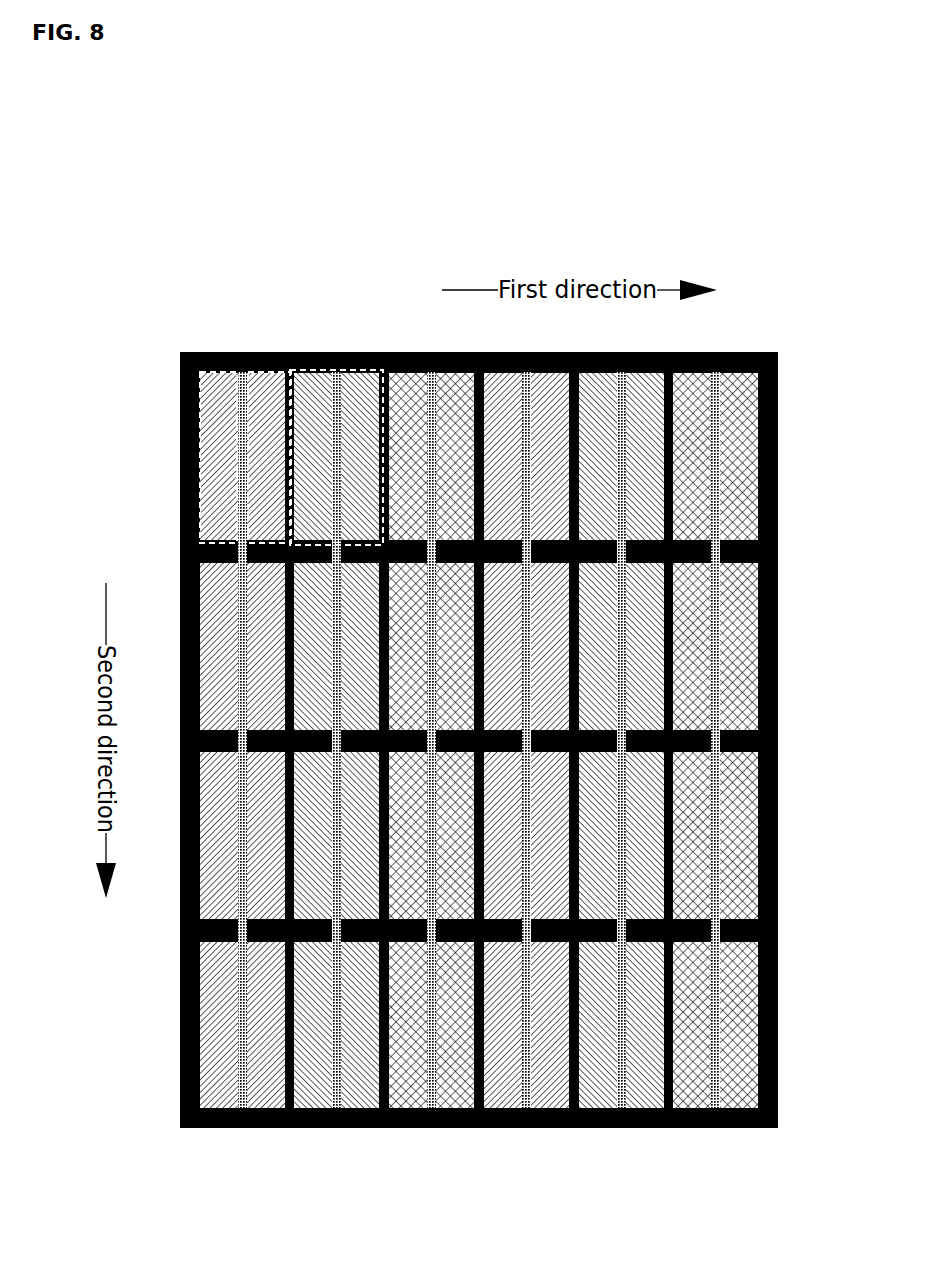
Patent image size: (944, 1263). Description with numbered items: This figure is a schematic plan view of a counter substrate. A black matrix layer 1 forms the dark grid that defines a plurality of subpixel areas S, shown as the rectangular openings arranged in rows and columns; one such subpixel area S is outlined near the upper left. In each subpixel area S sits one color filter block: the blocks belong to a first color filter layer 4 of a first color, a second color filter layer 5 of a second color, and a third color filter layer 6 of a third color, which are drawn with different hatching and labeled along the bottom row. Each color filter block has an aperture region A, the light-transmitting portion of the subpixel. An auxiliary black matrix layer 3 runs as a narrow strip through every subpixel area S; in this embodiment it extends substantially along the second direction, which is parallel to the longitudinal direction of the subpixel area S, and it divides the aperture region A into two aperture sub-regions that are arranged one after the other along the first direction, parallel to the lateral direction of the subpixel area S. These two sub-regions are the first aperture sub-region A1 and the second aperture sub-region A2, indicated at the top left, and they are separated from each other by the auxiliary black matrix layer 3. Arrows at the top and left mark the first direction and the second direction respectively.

The black matrix layer 1 is at (778, 437).
The auxiliary black matrix layer 3 is at (715, 457).
The first color filter layer 4 is at (548, 1068).
The second color filter layer 5 is at (643, 1068).
The third color filter layer 6 is at (740, 1068).
The aperture region A is at (172, 190).
The first aperture sub-region A1 is at (222, 372).
The second aperture sub-region A2 is at (258, 372).
The subpixel area S is at (350, 372).